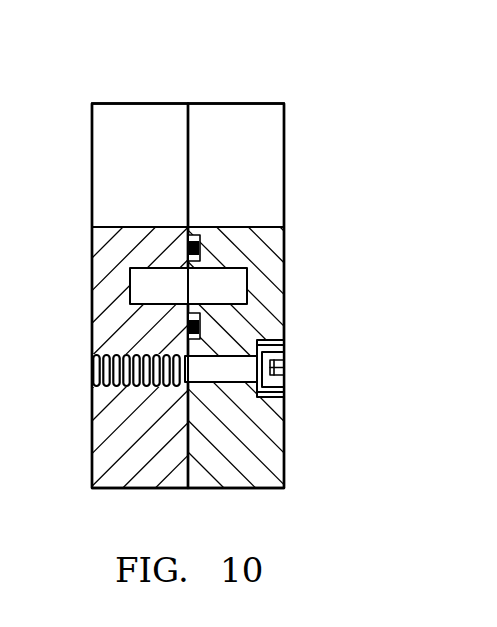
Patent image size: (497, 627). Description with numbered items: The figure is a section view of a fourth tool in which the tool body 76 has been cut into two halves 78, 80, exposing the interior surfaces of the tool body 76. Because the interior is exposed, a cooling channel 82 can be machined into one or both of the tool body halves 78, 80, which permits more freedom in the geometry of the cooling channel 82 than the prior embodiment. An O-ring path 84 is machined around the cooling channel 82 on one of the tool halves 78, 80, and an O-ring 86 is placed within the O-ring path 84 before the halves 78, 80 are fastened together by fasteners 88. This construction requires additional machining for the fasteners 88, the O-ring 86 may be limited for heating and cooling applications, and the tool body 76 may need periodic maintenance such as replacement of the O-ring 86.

The tool body 76 is at (139, 97).
The tool body half 78 is at (92, 139).
The tool body half 80 is at (231, 103).
The cooling channel 82 is at (132, 293).
The O-ring path 84 is at (200, 248).
The O-ring 86 is at (193, 235).
The fastener 88 is at (278, 364).